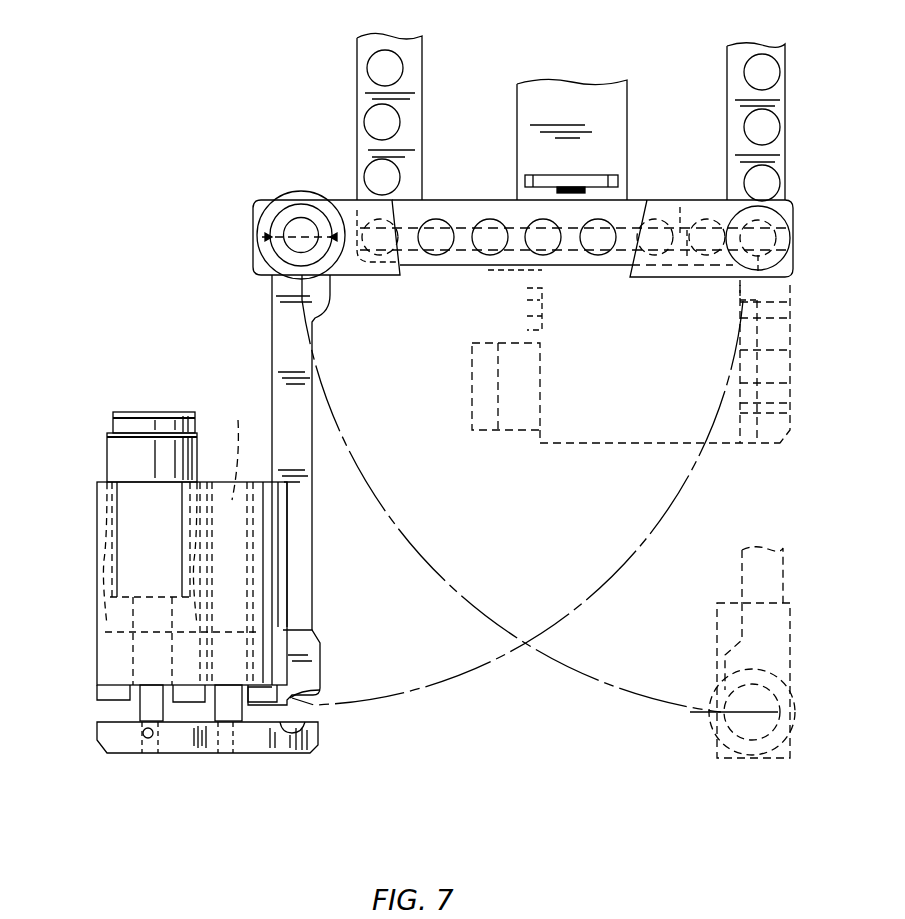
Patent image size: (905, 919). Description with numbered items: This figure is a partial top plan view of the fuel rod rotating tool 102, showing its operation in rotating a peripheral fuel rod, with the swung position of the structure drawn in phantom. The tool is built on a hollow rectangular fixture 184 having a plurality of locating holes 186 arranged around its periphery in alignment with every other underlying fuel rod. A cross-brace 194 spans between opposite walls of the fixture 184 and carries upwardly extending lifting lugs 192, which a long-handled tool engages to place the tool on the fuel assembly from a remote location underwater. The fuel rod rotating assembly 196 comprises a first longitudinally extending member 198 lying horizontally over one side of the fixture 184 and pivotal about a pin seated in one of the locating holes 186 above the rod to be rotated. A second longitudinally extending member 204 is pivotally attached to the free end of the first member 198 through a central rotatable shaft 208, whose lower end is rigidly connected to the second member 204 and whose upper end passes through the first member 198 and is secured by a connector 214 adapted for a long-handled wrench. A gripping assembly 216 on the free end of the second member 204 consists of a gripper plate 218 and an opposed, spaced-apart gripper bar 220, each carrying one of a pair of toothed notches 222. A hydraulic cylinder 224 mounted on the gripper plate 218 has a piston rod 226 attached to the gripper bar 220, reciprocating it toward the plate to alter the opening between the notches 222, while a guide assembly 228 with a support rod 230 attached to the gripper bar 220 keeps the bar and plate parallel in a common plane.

The fuel rod rotating tool 102 is at (541, 78).
The hollow rectangular fixture 184 is at (387, 116).
The locating holes 186 is at (400, 120).
The lifting lugs 192 is at (580, 180).
The cross-brace 194 is at (602, 123).
The fuel rod rotating assembly 196 is at (266, 343).
The first longitudinally extending member 198 is at (350, 273).
The second longitudinally extending member 204 is at (307, 432).
The central rotatable shaft 208 is at (271, 209).
The connector 214 is at (290, 233).
The gripping assembly 216 is at (93, 521).
The gripper plate 218 is at (300, 642).
The gripper bar 220 is at (120, 738).
The toothed notches 222 is at (298, 696).
The hydraulic cylinder 224 is at (120, 455).
The piston rod 226 is at (145, 703).
The guide assembly 228 is at (532, 316).
The support rod 230 is at (233, 714).